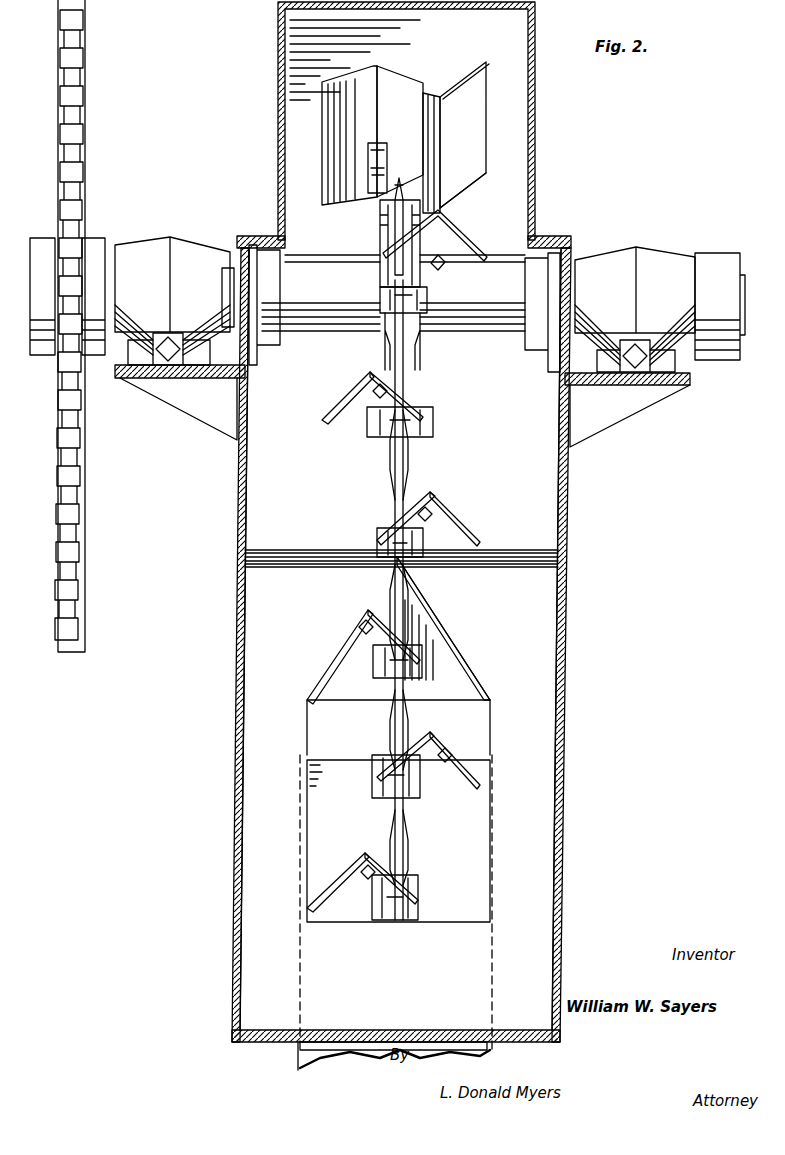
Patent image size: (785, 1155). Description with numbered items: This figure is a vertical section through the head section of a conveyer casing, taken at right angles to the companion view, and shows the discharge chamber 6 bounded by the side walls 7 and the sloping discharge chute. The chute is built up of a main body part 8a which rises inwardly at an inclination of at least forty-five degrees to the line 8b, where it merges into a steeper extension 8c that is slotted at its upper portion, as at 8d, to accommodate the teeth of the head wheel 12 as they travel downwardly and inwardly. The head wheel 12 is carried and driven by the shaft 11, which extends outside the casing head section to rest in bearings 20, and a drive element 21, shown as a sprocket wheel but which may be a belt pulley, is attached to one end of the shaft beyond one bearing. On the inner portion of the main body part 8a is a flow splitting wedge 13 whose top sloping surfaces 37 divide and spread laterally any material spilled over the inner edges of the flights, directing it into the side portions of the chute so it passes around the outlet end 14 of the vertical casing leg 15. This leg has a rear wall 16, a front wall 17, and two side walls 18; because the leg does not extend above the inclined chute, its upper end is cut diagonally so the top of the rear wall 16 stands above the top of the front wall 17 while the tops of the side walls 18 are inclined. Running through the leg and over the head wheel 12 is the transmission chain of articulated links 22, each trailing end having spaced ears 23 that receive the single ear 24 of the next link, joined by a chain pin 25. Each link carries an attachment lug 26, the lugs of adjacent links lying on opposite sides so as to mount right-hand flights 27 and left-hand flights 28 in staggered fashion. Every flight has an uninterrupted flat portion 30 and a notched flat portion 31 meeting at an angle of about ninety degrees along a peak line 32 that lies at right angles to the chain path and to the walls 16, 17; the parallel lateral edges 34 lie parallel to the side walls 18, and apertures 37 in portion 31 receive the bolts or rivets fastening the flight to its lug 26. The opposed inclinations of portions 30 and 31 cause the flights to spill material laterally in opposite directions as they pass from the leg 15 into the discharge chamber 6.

The discharge chamber 6 is at (248, 578).
The side walls 7 is at (238, 690).
The main body part of discharge chute 8a is at (394, 985).
The line 8b is at (503, 553).
The discharge chute extension 8c is at (506, 453).
The slot 8d is at (435, 402).
The shaft 11 is at (480, 330).
The head wheel 12 is at (385, 358).
The flow splitting wedge 13 is at (455, 645).
The outlet end 14 is at (300, 832).
The vertical casing leg 15 is at (296, 1056).
The rear wall 16 is at (480, 868).
The front wall 17 is at (345, 1058).
The side walls 18 is at (298, 997).
The bearings 20 is at (155, 243).
The drive element 21 is at (80, 565).
The articulated links 22 is at (390, 480).
The spaced ears 23 is at (400, 440).
The single ear 24 is at (392, 425).
The chain pin 25 is at (395, 920).
The attachment lug 26 is at (440, 272).
The right-hand flights 27 is at (480, 152).
The left-hand flights 28 is at (320, 157).
The flat portion 30 is at (348, 405).
The flat portion 31 is at (432, 390).
The peak line 32 is at (433, 492).
The lateral edges 34 is at (495, 245).
The apertures 37 is at (465, 668).